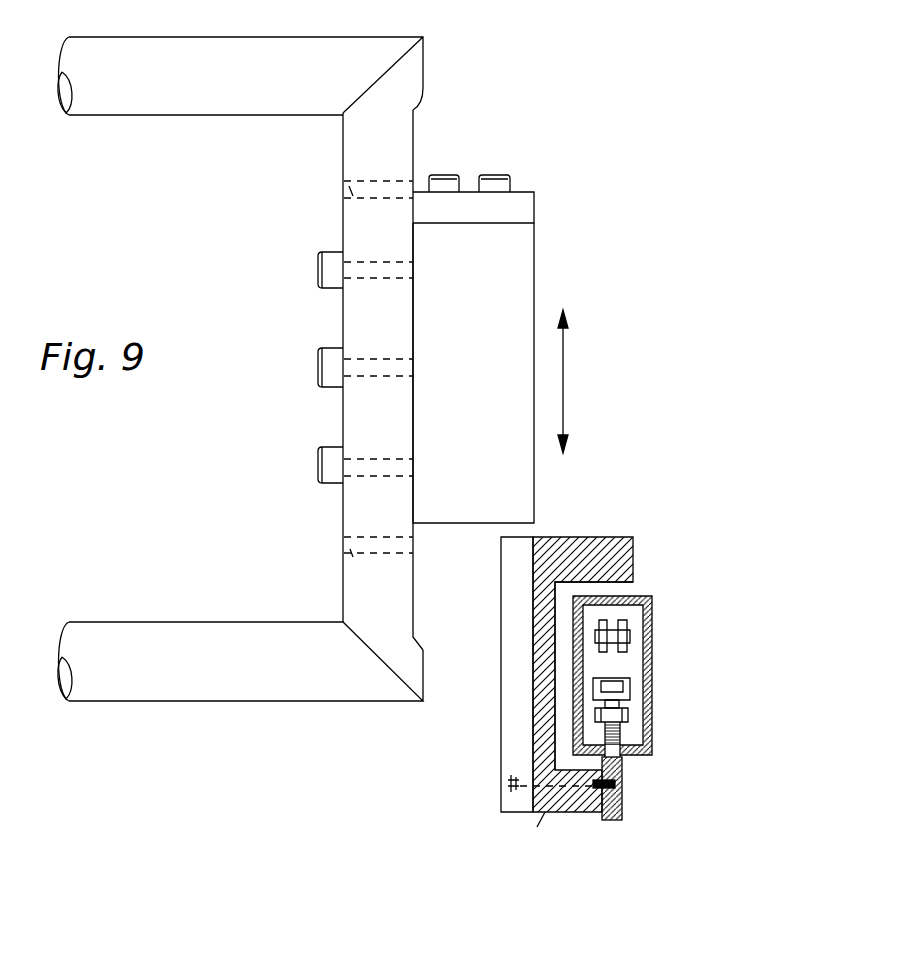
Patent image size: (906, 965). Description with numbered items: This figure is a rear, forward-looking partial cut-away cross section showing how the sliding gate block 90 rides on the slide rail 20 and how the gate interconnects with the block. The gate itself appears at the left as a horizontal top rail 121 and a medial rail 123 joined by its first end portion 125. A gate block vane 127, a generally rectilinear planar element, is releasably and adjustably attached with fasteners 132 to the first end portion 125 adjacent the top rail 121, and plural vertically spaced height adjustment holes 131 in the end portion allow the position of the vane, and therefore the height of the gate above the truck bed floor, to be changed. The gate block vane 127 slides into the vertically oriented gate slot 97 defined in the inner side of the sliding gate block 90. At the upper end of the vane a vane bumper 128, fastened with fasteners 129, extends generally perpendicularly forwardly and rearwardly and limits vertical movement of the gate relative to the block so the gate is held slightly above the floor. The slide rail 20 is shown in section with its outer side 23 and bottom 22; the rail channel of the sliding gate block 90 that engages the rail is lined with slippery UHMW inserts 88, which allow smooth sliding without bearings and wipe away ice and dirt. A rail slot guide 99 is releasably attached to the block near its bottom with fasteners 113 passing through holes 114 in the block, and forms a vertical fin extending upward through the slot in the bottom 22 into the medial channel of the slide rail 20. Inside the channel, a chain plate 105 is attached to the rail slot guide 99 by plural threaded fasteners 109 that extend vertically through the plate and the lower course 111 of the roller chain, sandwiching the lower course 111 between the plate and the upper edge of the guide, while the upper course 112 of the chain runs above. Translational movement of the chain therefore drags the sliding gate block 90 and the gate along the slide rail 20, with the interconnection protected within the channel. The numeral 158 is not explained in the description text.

The frame 158 is at (223, 0).
The top rail 121 is at (159, 97).
The medial rail 123 is at (180, 643).
The first end portion 125 is at (397, 118).
The gate block vane 127 is at (510, 308).
The vane bumper 128 is at (515, 208).
The fasteners 129 is at (493, 185).
The height adjustment holes 131 is at (343, 181).
The fasteners 132 is at (333, 270).
The sliding gate block 90 is at (527, 649).
The gate slot 97 is at (512, 730).
The inserts 88 is at (620, 588).
The slide rail 20 is at (677, 693).
The outer side 23 is at (650, 645).
The upper course 112 is at (615, 633).
The threaded fasteners 109 is at (618, 683).
The chain plate 105 is at (630, 693).
The lower course 111 is at (630, 713).
The bottom 22 is at (632, 765).
The rail slot guide 99 is at (622, 768).
The holes 114 is at (503, 778).
The fasteners 113 is at (537, 827).